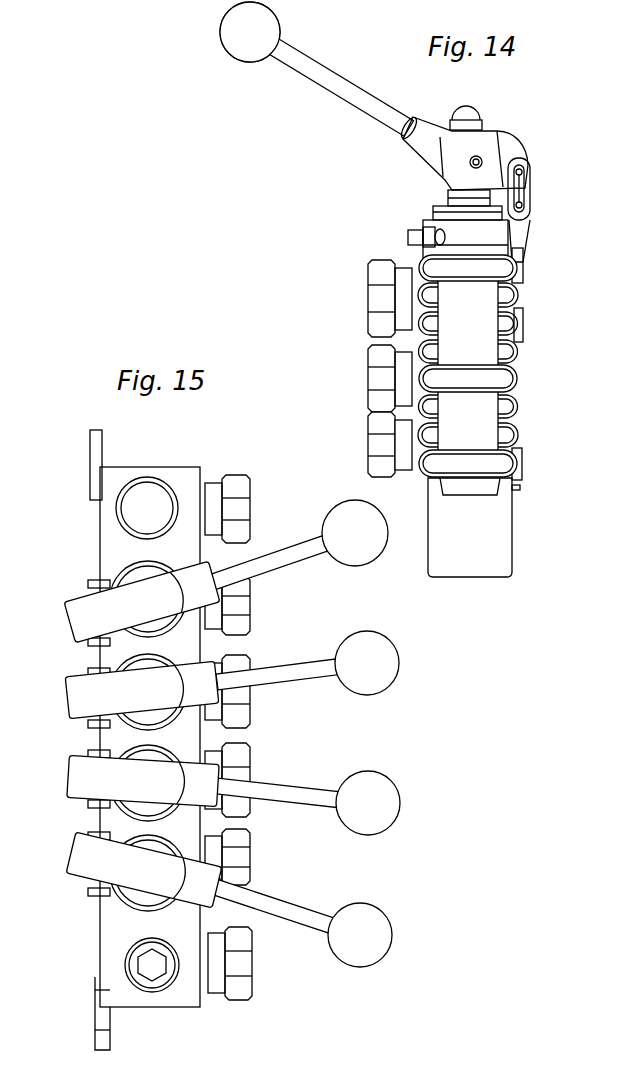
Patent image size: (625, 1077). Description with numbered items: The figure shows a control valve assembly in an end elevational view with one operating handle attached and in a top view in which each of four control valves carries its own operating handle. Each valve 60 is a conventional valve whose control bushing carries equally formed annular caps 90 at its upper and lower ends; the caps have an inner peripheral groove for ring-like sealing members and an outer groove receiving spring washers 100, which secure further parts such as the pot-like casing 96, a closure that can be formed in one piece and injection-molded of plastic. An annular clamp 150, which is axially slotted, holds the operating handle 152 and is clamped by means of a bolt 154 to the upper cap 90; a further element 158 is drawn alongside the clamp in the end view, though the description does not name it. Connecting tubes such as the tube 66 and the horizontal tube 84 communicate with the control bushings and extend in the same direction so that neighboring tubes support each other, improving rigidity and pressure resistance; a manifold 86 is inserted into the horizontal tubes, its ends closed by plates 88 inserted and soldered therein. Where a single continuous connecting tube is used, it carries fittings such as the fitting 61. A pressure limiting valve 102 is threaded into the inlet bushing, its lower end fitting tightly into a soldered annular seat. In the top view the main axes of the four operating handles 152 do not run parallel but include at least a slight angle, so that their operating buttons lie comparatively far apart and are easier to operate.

In FIG. 14, the valve 60 is at (457, 197).
In FIG. 14, the fitting 61 is at (377, 465).
In FIG. 15, the tube 66 is at (100, 557).
In FIG. 14, the tube 84 is at (507, 357).
In FIG. 14, the manifold 86 is at (477, 430).
In FIG. 15, the manifold 86 is at (118, 505).
In FIG. 15, the plate 88 is at (142, 495).
In FIG. 14, the annular cap 90 is at (438, 217).
In FIG. 15, the annular cap 90 is at (120, 813).
In FIG. 14, the pot-like casing 96 is at (502, 540).
In FIG. 14, the spring washer 100 is at (517, 488).
In FIG. 15, the pressure limiting valve 102 is at (132, 960).
In FIG. 14, the annular clamp 150 is at (493, 235).
In FIG. 15, the annular clamp 150 is at (130, 733).
In FIG. 14, the operating handle 152 is at (368, 108).
In FIG. 15, the operating handle 152 is at (303, 672).
In FIG. 14, the bolt 154 is at (422, 247).
In FIG. 14, the link 158 is at (505, 190).